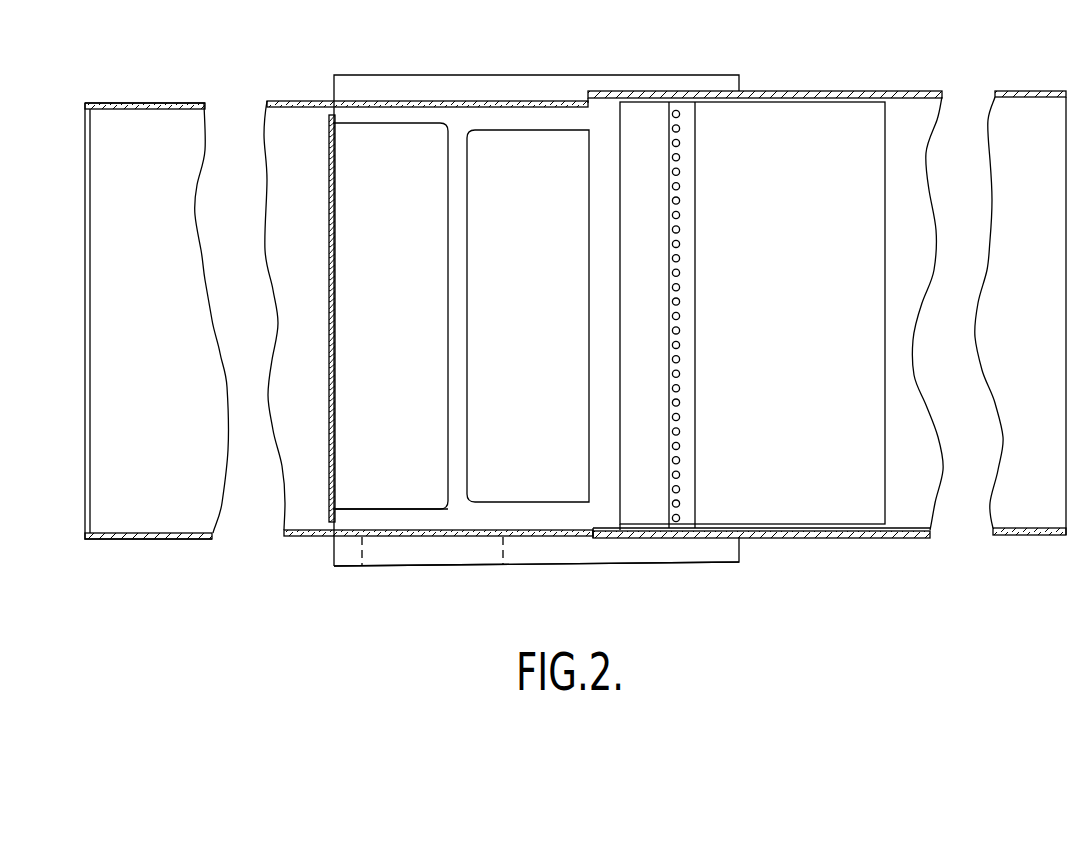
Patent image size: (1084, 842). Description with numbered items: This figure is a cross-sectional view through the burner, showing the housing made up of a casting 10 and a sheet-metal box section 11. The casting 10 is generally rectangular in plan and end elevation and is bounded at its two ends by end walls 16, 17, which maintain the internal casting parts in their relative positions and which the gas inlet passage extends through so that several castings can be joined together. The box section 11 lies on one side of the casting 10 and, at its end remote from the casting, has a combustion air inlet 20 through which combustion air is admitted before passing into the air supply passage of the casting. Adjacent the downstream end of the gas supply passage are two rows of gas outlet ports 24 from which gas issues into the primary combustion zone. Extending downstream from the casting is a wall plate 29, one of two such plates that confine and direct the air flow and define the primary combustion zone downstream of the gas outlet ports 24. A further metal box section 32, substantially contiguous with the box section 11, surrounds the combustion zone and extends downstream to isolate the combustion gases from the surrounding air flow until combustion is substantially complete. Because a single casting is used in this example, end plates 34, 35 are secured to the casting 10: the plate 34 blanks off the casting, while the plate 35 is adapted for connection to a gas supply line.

The casting 10 is at (457, 152).
The box section 11 is at (293, 125).
The end wall 16 is at (399, 118).
The end wall 17 is at (427, 520).
The combustion air inlet 20 is at (82, 400).
The gas outlet ports 24 is at (680, 477).
The wall plate 29 is at (838, 505).
The further metal box section 32 is at (918, 538).
The end plate 34 is at (545, 92).
The end plate 35 is at (577, 550).